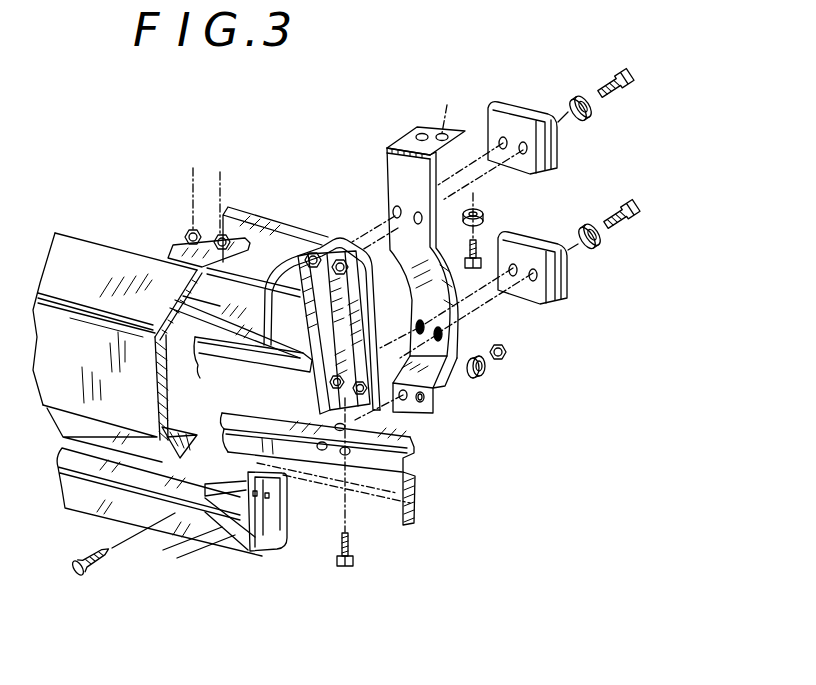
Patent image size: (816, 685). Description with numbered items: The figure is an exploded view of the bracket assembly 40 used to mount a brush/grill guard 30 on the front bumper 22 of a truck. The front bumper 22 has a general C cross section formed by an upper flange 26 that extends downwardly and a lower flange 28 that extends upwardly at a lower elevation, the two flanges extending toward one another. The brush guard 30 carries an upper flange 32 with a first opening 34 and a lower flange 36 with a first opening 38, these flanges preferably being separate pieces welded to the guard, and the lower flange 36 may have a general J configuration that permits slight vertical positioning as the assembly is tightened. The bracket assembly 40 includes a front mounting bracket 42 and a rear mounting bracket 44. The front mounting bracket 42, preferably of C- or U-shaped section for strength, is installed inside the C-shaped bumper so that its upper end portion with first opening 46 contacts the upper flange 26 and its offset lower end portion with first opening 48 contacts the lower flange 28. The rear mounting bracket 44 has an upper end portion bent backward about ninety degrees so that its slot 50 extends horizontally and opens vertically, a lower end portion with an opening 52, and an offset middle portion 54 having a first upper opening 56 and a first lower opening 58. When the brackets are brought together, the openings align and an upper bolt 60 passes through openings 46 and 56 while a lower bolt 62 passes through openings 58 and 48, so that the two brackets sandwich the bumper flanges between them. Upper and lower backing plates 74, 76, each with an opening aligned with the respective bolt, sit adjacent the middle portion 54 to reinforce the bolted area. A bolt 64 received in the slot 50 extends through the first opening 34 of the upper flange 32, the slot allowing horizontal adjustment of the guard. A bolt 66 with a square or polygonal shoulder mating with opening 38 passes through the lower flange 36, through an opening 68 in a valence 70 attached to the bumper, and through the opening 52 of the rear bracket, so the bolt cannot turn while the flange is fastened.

The front bumper 22 is at (258, 195).
The upper flange 26 is at (318, 226).
The lower flange 28 is at (363, 415).
The brush/grill guard 30 is at (80, 233).
The upper flange 32 is at (167, 256).
The first opening 34 is at (187, 232).
The lower flange 36 is at (288, 513).
The first opening 38 is at (263, 557).
The bracket assembly 40 is at (513, 393).
The front mounting bracket 42 is at (272, 300).
The rear mounting bracket 44 is at (386, 150).
The first opening 46 is at (345, 270).
The first opening 48 is at (285, 345).
The slot 50 is at (418, 133).
The opening 52 is at (437, 347).
The middle portion 54 is at (460, 297).
The first upper opening 56 is at (396, 199).
The first lower opening 58 is at (422, 400).
The upper bolt 60 is at (640, 82).
The lower bolt 62 is at (646, 210).
The bolt 64 is at (497, 290).
The bolt 66 is at (84, 580).
The opening 68 is at (242, 460).
The valence 70 is at (418, 480).
The upper backing plate 74 is at (517, 112).
The lower backing plate 76 is at (520, 240).